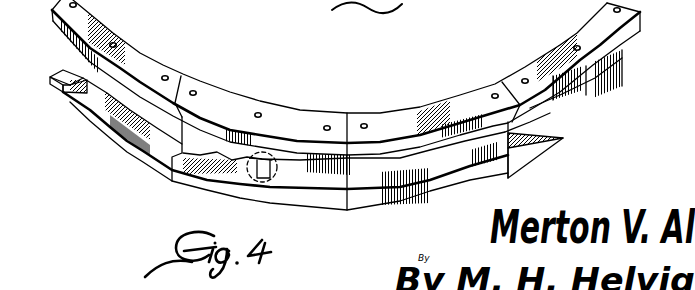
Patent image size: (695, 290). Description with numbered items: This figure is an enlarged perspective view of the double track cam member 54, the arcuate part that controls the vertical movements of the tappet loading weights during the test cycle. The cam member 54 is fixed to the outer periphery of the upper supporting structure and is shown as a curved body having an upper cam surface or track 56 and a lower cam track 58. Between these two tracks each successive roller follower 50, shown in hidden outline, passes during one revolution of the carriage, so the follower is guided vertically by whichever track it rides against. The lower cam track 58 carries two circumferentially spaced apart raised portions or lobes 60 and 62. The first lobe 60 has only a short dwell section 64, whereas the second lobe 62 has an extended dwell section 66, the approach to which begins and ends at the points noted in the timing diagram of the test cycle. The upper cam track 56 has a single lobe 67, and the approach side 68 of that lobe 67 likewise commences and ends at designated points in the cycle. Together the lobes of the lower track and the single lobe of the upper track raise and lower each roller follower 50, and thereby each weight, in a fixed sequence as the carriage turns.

The roller follower 50 is at (272, 155).
The double track cam member 54 is at (382, 122).
The upper cam surface or track 56 is at (632, 48).
The lower cam track 58 is at (505, 168).
The raised portion or lobe 60 is at (50, 86).
The raised portion or lobe 62 is at (307, 198).
The short dwell section 64 is at (66, 69).
The extended dwell section 66 is at (383, 192).
The lobe 67 is at (573, 85).
The approach side 68 is at (557, 107).